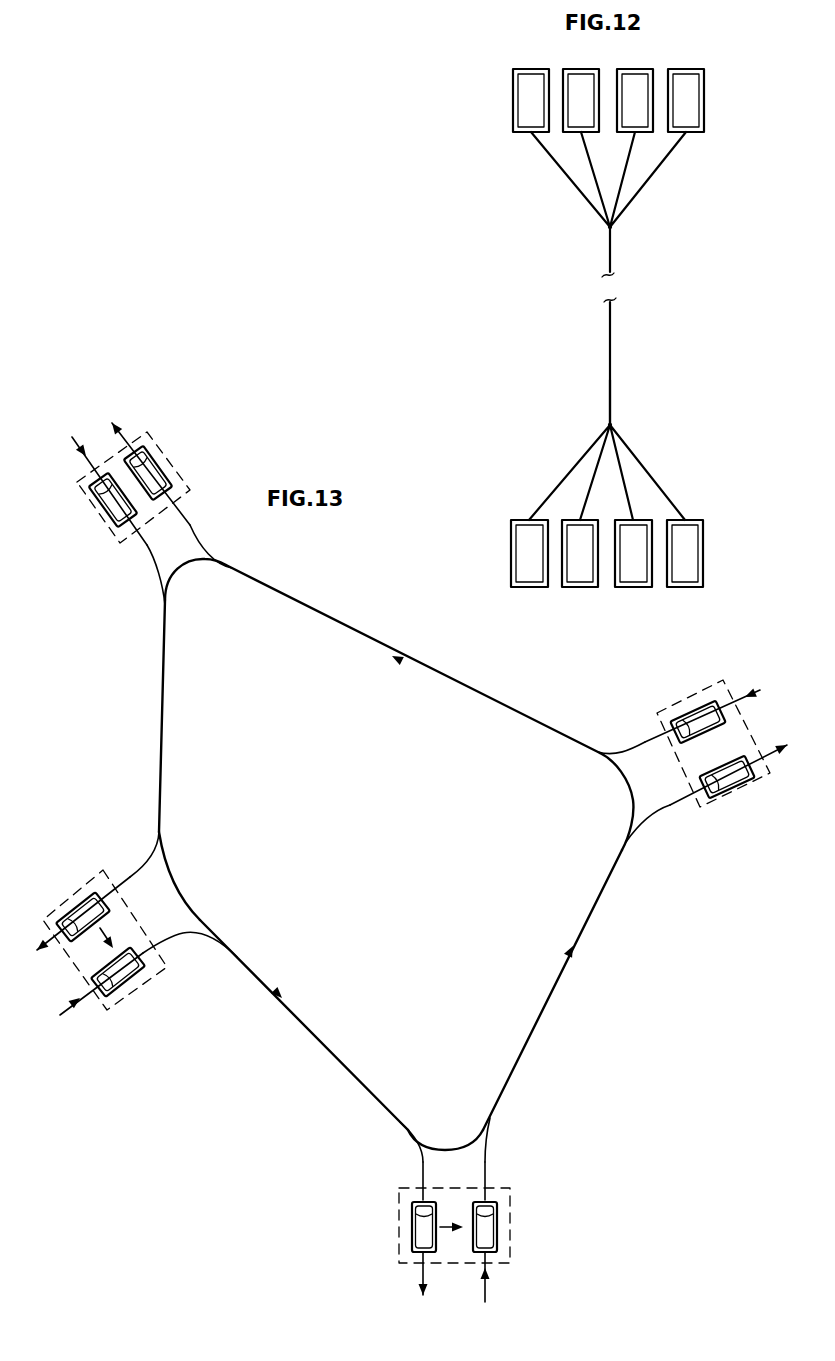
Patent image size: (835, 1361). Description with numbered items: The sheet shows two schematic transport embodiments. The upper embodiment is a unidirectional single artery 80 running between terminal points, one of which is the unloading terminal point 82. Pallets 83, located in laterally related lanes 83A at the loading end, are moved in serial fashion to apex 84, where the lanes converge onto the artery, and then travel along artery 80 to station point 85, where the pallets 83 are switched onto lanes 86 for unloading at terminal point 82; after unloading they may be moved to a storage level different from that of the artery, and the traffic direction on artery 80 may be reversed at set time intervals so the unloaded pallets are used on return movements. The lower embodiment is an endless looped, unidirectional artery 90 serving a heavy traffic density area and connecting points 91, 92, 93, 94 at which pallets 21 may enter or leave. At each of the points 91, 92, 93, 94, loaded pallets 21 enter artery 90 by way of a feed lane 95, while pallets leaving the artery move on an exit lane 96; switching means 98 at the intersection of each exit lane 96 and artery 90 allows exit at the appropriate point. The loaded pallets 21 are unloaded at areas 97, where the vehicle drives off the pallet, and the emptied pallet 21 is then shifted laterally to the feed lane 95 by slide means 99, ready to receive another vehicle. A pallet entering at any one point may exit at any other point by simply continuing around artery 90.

In FIG. 13, the pallet 21 is at (90, 493).
In FIG. 12, the artery 80 is at (612, 332).
In FIG. 12, the terminal point 82 is at (592, 419).
In FIG. 12, the pallet 83 is at (583, 80).
In FIG. 12, the lane 83A is at (582, 142).
In FIG. 12, the apex 84 is at (613, 229).
In FIG. 12, the station point 85 is at (613, 425).
In FIG. 12, the lane 86 is at (650, 468).
In FIG. 13, the artery 90 is at (424, 685).
In FIG. 13, the point 91 is at (186, 578).
In FIG. 13, the point 92 is at (188, 876).
In FIG. 13, the point 93 is at (448, 1130).
In FIG. 13, the point 94 is at (622, 801).
In FIG. 13, the feed lane 95 is at (147, 542).
In FIG. 13, the exit lane 96 is at (187, 523).
In FIG. 13, the unloading area 97 is at (162, 446).
In FIG. 13, the switching means 98 is at (220, 563).
In FIG. 13, the slide means 99 is at (120, 1010).